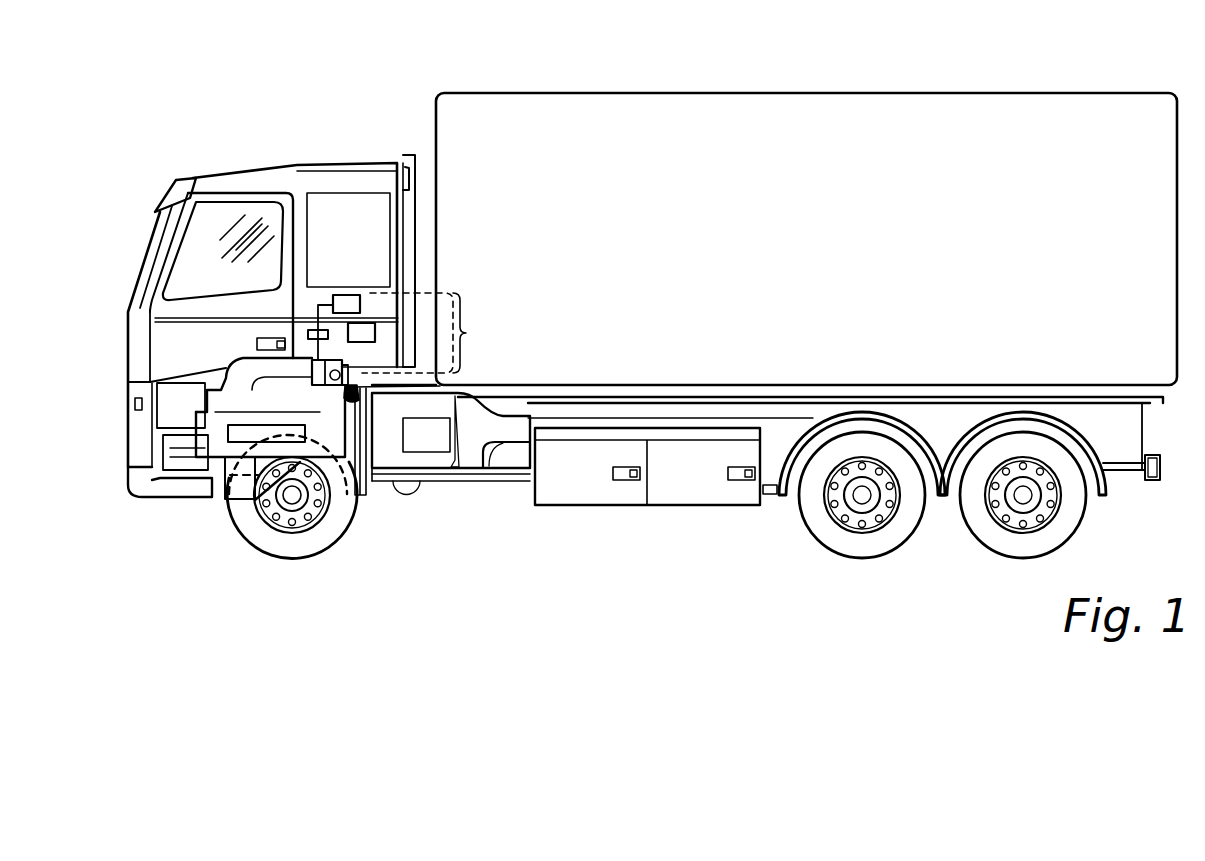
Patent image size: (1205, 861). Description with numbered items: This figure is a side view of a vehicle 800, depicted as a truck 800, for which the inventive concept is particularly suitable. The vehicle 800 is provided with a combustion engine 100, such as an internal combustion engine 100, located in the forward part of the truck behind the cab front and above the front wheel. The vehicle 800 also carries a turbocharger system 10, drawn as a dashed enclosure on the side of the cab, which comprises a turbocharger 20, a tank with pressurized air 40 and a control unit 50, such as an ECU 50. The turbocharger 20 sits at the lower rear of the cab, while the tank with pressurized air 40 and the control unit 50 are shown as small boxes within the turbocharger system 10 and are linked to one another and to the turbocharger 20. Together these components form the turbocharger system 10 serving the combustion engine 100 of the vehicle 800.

The vehicle 800 is at (373, 93).
The combustion engine 100 is at (218, 440).
The turbocharger system 10 is at (430, 333).
The turbocharger 20 is at (355, 380).
The tank with pressurized air 40 is at (353, 295).
The control unit 50 is at (375, 328).